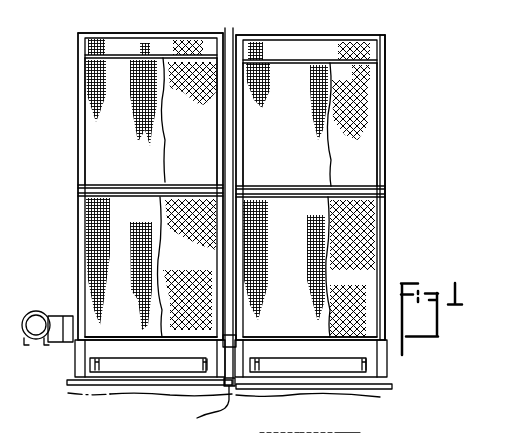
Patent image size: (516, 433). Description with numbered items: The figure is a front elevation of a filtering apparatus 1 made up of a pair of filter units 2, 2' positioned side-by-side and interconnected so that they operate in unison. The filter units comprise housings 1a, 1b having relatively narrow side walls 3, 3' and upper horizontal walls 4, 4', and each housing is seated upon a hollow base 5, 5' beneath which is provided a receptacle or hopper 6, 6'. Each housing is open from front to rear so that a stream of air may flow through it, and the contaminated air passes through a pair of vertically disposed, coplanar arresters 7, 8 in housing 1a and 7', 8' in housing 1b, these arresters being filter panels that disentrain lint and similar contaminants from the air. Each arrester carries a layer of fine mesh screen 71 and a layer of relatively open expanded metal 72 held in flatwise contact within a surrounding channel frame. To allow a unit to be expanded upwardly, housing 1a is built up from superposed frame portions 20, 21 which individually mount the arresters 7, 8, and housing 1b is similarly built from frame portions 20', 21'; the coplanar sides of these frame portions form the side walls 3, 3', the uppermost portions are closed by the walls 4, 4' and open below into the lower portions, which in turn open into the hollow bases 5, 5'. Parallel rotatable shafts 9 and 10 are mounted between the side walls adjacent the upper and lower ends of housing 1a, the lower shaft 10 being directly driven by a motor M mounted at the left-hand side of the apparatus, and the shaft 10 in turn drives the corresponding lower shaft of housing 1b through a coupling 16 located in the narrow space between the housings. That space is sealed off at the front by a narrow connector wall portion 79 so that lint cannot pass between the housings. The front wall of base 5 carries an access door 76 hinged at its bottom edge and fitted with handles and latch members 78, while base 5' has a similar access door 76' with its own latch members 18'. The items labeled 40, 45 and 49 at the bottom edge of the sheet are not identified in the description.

The filtering apparatus 1 is at (422, 72).
The housing 1a is at (80, 32).
The housing 1b is at (385, 36).
The filter unit 2 is at (150, 19).
The filter unit 2' is at (317, 20).
The side wall 3 is at (207, 186).
The side wall 3' is at (404, 187).
The upper horizontal wall 4 is at (151, 31).
The upper horizontal wall 4' is at (310, 34).
The hollow base 5 is at (125, 358).
The hollow base 5' is at (330, 363).
The receptacle or hopper 6 is at (129, 392).
The receptacle or hopper 6' is at (336, 396).
The arrester 7 is at (130, 120).
The arrester 7' is at (335, 101).
The arrester 8 is at (130, 267).
The arrester 8' is at (331, 267).
The upper shaft 9 is at (122, 56).
The lower shaft 10 is at (177, 338).
The coupling 16 is at (197, 420).
The pin 18' is at (305, 359).
The upper frame portion 20 is at (126, 121).
The upper frame portion 20' is at (330, 114).
The lower frame portion 21 is at (131, 261).
The lower frame portion 21' is at (332, 261).
The bottom member 40 is at (266, 426).
The bottom member 45 is at (302, 426).
The bottom member 49 is at (345, 432).
The fine mesh screen 71 is at (328, 153).
The expanded metal 72 is at (365, 168).
The access door 76 is at (148, 360).
The access door 76' is at (308, 360).
The handles and latch members 78 is at (96, 365).
The connector wall portion 79 is at (231, 40).
The motor M is at (50, 312).